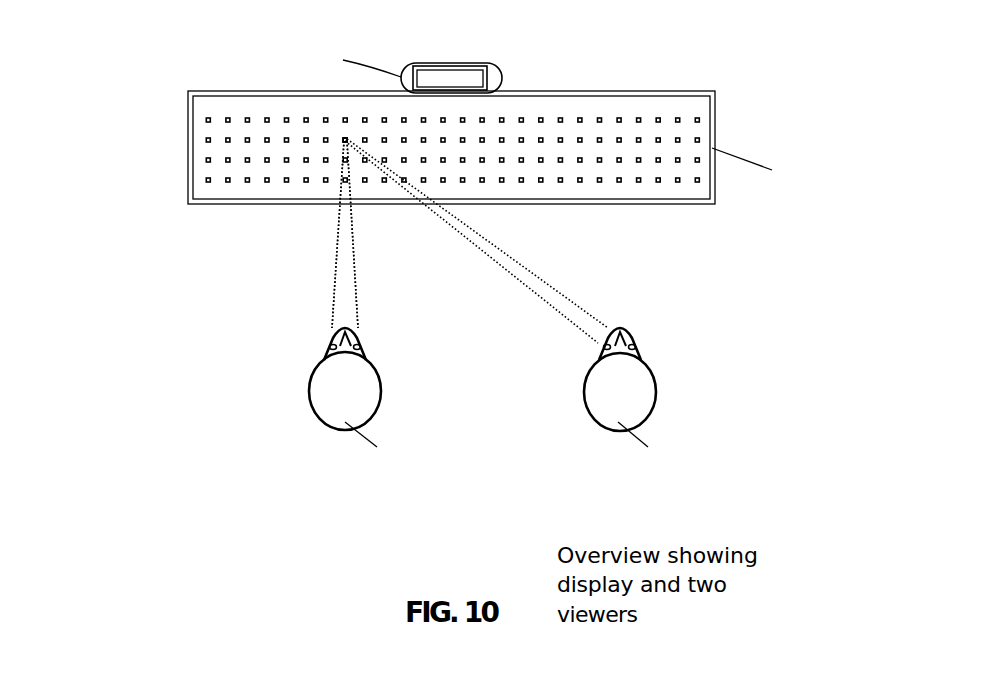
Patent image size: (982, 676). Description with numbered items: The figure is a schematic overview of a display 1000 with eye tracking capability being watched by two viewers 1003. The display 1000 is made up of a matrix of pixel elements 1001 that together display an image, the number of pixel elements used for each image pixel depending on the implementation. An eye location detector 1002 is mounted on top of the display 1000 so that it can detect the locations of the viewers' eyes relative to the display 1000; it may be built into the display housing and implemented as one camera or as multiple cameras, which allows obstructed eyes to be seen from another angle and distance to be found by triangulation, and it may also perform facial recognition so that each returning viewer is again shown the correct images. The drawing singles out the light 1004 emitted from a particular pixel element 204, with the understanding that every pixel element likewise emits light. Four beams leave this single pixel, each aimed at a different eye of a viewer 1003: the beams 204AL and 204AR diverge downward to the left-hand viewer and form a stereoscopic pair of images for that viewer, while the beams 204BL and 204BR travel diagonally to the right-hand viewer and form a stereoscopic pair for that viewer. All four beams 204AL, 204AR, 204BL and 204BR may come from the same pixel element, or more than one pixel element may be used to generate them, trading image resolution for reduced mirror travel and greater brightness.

The display 1000 is at (712, 104).
The pixel elements 1001 is at (345, 139).
The eye location detector 1002 is at (502, 72).
The viewers 1003 is at (382, 383).
The light emitted by a pixel element 1004 is at (332, 278).
The pixel element 204 is at (335, 291).
The beam to left eye of left-hand viewer 204AL is at (338, 243).
The beam to right eye of left-hand viewer 204AR is at (355, 250).
The beam to left eye of right-hand viewer 204BL is at (540, 295).
The beam to right eye of right-hand viewer 204BR is at (512, 258).